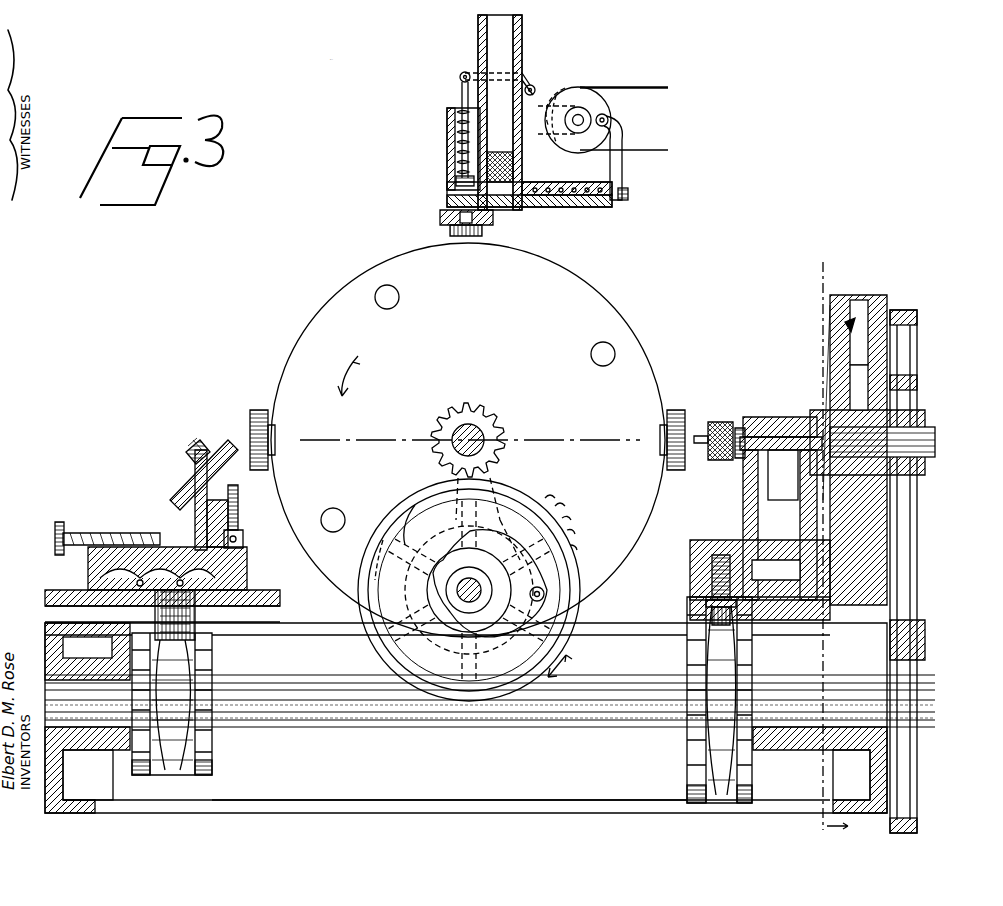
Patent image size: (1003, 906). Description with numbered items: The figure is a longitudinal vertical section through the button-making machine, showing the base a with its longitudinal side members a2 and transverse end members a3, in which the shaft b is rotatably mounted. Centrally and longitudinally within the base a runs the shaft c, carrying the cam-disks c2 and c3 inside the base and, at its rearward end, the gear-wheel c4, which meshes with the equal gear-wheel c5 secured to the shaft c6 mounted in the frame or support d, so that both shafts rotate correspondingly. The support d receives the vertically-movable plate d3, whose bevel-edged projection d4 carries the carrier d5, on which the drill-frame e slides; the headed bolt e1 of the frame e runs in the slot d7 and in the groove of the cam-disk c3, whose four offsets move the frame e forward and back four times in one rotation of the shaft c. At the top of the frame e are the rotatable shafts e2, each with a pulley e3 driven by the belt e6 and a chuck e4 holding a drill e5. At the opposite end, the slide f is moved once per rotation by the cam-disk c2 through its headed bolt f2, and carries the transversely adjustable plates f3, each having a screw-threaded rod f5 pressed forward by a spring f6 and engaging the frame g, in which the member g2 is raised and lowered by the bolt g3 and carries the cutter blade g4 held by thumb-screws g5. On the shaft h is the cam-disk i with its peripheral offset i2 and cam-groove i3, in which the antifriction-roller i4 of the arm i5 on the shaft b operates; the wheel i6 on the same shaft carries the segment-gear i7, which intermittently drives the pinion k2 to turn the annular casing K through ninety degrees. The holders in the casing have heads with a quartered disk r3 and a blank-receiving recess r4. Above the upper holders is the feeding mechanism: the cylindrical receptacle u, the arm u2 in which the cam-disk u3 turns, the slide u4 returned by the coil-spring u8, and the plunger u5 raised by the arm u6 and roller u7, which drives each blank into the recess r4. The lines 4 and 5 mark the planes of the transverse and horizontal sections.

The base a is at (466, 718).
The side members a2 is at (449, 784).
The end members a3 is at (63, 784).
The shaft c is at (386, 722).
The cam-disk c2 is at (210, 752).
The cam-disk c3 is at (686, 760).
The gear-wheel c4 is at (918, 636).
The gear-wheel c5 is at (917, 512).
The shaft c6 is at (935, 440).
The slide f is at (45, 596).
The headed bolt f2 is at (190, 650).
The plates f3 is at (88, 572).
The screw-threaded rod f5 is at (116, 532).
The spring f6 is at (60, 522).
The frame g is at (195, 522).
The vertically-movable member g2 is at (240, 522).
The screw-threaded bolt g3 is at (238, 497).
The blade or cutter g4 is at (180, 490).
The thumb-screws g5 is at (186, 446).
The disk r3 is at (256, 410).
The recess r4 is at (440, 216).
The annular casing K is at (304, 328).
The pinion k2 is at (470, 404).
The shaft b is at (455, 430).
The section line 5 5 is at (467, 441).
The cam-disk i is at (400, 645).
The offset i2 is at (418, 512).
The cam-groove i3 is at (426, 592).
The antifriction-roller i4 is at (544, 590).
The arm i5 is at (508, 484).
The wheel i6 is at (368, 549).
The segment-gear i7 is at (562, 506).
The shaft h is at (464, 604).
The cylindrical receptacle u is at (522, 52).
The arm u2 is at (521, 167).
The cam-disk u3 is at (580, 93).
The slide u4 is at (520, 208).
The plunger u5 is at (458, 186).
The arm u6 is at (462, 72).
The antifriction-roller u7 is at (536, 88).
The coil-spring u8 is at (612, 210).
The frame or support d is at (884, 296).
The vertically-movable plate d3 is at (860, 300).
The bevel-edged projection d4 is at (851, 318).
The carrier d5 is at (836, 305).
The slot d7 is at (696, 576).
The section line 4 4 is at (828, 541).
The frame e is at (760, 518).
The headed bolt e1 is at (712, 615).
The rotatable shafts e2 is at (742, 428).
The pulley e3 is at (778, 436).
The chucks e4 is at (718, 422).
The drill e5 is at (696, 436).
The belt e6 is at (817, 435).